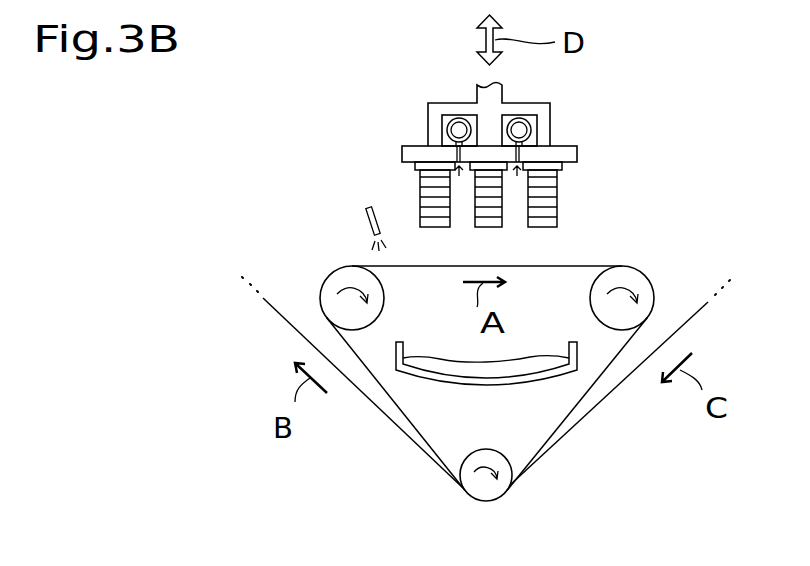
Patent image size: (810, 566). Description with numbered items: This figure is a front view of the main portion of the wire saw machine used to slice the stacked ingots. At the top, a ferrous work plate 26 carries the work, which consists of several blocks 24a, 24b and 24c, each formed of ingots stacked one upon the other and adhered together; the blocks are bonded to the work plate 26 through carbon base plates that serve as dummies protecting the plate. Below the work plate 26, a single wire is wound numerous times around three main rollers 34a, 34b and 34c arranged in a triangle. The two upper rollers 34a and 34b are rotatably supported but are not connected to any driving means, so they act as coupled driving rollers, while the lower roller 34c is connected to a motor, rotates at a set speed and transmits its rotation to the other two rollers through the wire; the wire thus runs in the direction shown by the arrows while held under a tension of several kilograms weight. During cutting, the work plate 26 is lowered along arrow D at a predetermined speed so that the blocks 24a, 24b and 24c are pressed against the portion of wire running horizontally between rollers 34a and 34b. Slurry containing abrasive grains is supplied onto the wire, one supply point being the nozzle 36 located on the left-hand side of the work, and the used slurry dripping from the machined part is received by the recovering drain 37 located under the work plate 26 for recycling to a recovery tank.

The block 24a is at (421, 188).
The block 24b is at (502, 213).
The block 24c is at (558, 193).
The work plate 26 is at (578, 150).
The main roller 34a is at (328, 293).
The main roller 34b is at (652, 280).
The main roller 34c is at (490, 493).
The nozzle 36 is at (366, 217).
The recovering drain 37 is at (468, 385).